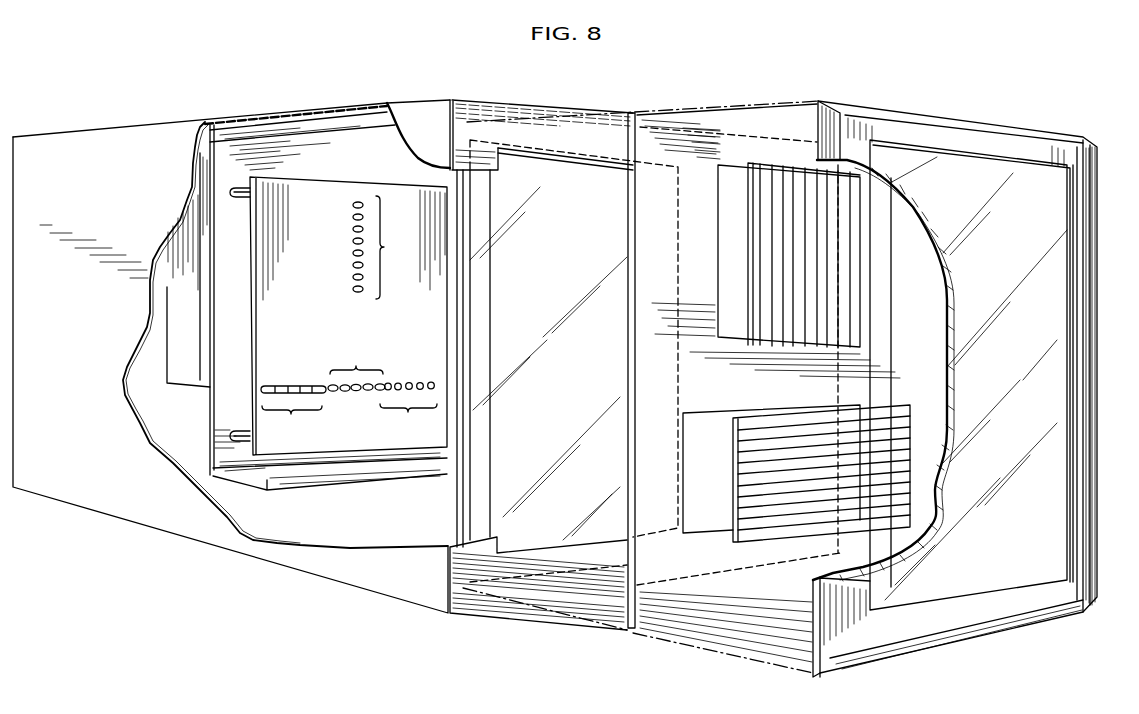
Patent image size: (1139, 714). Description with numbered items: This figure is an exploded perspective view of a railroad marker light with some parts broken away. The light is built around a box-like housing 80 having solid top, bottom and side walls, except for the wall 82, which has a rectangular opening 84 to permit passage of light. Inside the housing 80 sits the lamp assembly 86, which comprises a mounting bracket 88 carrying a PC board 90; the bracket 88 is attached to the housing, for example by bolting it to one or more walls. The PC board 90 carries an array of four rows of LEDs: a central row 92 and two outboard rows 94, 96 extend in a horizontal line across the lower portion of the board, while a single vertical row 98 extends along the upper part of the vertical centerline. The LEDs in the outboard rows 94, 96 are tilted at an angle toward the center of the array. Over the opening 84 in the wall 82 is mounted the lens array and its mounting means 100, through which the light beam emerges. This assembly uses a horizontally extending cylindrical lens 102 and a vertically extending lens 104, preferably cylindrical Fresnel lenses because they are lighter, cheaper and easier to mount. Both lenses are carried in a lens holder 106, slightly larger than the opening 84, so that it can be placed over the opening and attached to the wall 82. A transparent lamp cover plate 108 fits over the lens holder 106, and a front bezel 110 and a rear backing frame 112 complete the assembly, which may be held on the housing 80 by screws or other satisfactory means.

The housing 80 is at (146, 121).
The wall 82 is at (497, 114).
The opening 84 is at (583, 157).
The lamp assembly 86 is at (166, 379).
The mounting bracket 88 is at (377, 480).
The PC board 90 is at (318, 297).
The central row 92 is at (356, 366).
The outboard row 94 is at (293, 414).
The outboard row 96 is at (408, 409).
The vertical row 98 is at (381, 247).
The lens array and mounting means 100 is at (650, 648).
The horizontally extending cylindrical lens 102 is at (753, 507).
The vertically extending lens 104 is at (778, 178).
The lens holder 106 is at (627, 598).
The lamp cover plate 108 is at (987, 637).
The front bezel 110 is at (1090, 528).
The rear backing frame 112 is at (477, 503).